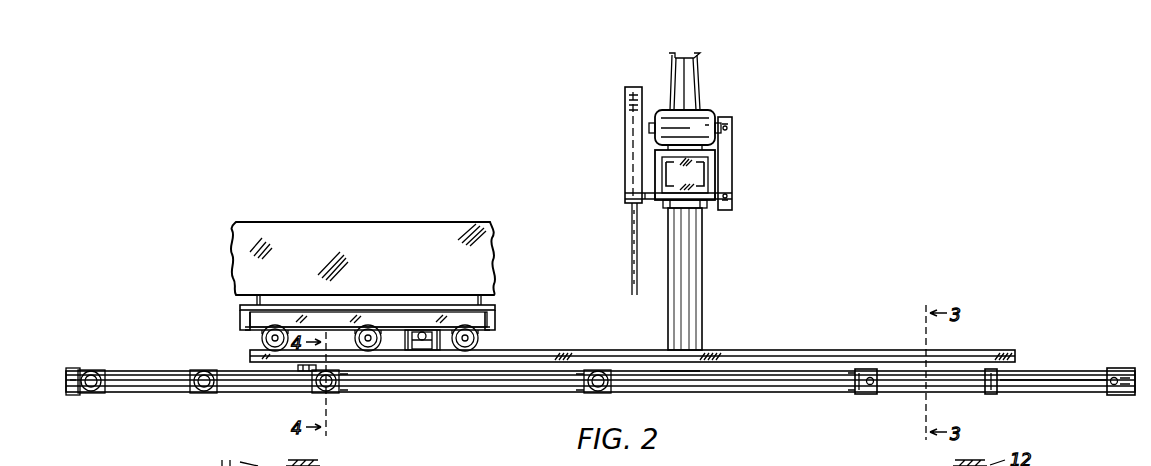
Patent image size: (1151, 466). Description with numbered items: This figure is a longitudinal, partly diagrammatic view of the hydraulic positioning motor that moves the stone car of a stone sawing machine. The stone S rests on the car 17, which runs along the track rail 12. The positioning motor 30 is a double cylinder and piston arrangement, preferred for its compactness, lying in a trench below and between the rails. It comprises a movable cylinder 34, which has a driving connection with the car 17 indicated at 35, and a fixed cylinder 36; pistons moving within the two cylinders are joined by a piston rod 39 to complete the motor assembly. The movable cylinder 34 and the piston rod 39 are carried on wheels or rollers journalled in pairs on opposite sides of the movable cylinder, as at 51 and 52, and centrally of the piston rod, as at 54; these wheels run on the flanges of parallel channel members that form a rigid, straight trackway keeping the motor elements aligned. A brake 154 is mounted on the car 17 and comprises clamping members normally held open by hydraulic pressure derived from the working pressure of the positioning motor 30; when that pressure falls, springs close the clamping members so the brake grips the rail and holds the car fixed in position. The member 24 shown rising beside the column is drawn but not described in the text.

The slab S is at (373, 229).
The rail 12 is at (558, 350).
The car 17 is at (490, 325).
The sensor bar 24 is at (630, 272).
The positioning motor 30 is at (825, 396).
The movable cylinder 34 is at (265, 393).
The driving connection 35 is at (298, 368).
The fixed cylinder 36 is at (1063, 392).
The piston rod 39 is at (673, 392).
The wheels or rollers 51 is at (108, 393).
The wheels or rollers 52 is at (200, 394).
The wheels or rollers 54 is at (600, 395).
The brake 154 is at (433, 352).